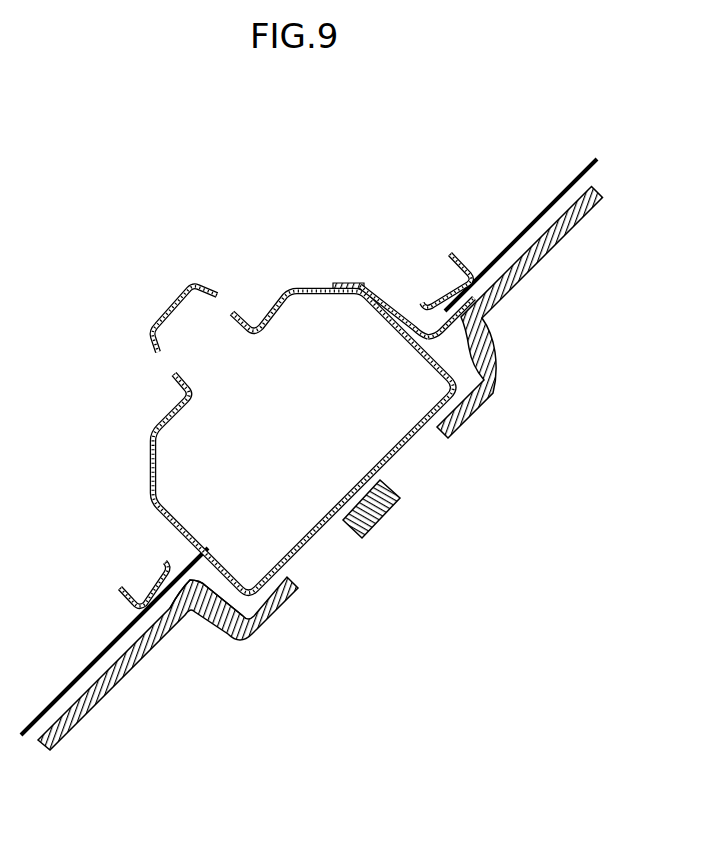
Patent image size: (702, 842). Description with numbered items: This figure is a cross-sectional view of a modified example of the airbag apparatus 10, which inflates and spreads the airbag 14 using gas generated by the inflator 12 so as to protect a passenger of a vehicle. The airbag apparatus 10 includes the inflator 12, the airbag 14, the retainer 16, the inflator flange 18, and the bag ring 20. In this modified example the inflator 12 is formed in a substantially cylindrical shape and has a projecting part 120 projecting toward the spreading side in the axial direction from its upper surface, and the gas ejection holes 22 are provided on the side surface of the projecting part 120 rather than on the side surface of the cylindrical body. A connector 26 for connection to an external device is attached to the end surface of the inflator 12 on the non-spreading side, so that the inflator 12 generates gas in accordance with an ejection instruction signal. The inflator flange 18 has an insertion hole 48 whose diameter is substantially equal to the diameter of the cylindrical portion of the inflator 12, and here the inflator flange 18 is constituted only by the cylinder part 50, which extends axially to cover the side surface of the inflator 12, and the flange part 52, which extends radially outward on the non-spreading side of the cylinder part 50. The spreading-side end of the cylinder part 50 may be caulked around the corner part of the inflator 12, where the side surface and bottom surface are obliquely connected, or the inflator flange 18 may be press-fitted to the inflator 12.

The airbag apparatus 10 is at (287, 367).
The inflator 12 is at (320, 286).
The airbag 14 is at (548, 206).
The retainer 16 is at (490, 357).
The inflator flange 18 is at (417, 262).
The bag ring 20 is at (455, 257).
The gas ejection holes 22 is at (166, 363).
The connector 26 is at (384, 512).
The insertion hole 48 is at (212, 575).
The cylinder part 50 is at (383, 327).
The flange part 52 is at (408, 322).
The projecting part 120 is at (172, 316).